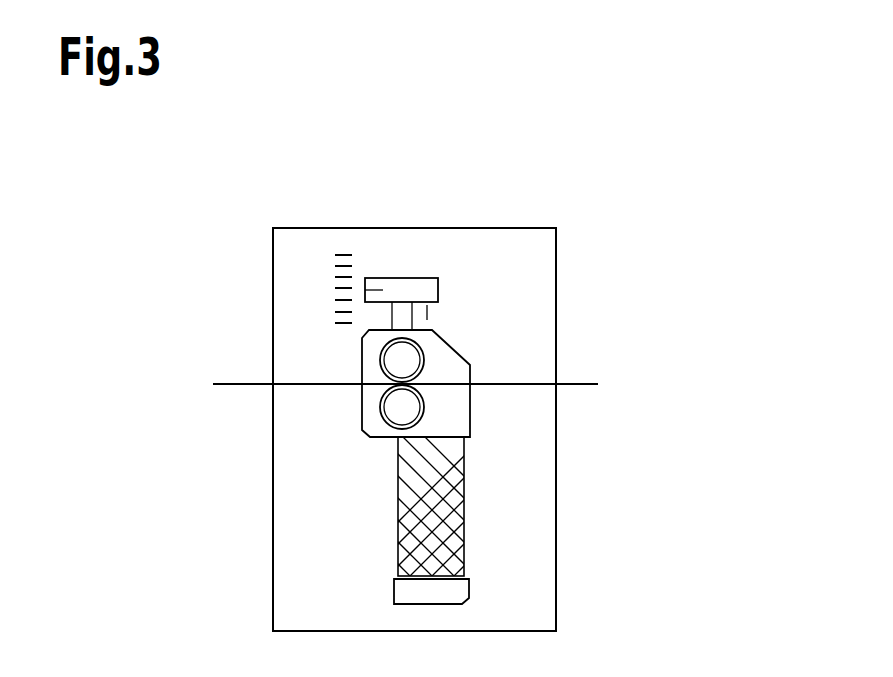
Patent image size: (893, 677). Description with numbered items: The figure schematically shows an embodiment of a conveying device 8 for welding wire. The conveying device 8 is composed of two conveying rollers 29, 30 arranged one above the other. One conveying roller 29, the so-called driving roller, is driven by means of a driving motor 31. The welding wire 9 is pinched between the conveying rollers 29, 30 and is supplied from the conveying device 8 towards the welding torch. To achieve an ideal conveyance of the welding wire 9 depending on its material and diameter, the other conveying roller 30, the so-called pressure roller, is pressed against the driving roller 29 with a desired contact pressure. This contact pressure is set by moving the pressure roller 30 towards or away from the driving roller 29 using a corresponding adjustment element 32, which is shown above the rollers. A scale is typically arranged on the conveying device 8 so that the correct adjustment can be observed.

The conveying device 8 is at (684, 159).
The welding wire 9 is at (567, 375).
The conveying roller 29 is at (403, 407).
The conveying roller 30 is at (403, 361).
The driving motor 31 is at (290, 258).
The adjustment element 32 is at (402, 291).